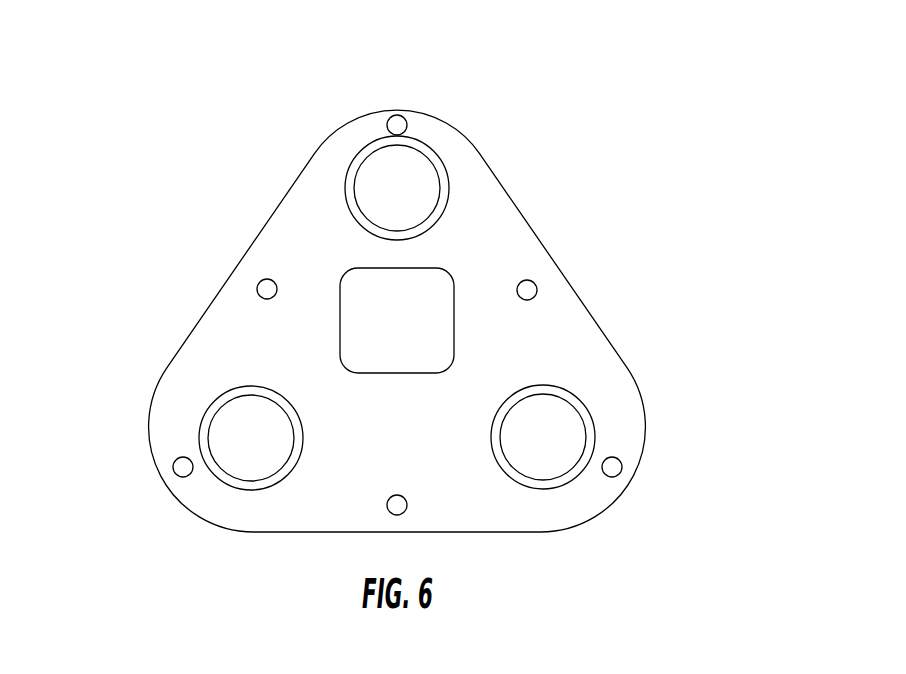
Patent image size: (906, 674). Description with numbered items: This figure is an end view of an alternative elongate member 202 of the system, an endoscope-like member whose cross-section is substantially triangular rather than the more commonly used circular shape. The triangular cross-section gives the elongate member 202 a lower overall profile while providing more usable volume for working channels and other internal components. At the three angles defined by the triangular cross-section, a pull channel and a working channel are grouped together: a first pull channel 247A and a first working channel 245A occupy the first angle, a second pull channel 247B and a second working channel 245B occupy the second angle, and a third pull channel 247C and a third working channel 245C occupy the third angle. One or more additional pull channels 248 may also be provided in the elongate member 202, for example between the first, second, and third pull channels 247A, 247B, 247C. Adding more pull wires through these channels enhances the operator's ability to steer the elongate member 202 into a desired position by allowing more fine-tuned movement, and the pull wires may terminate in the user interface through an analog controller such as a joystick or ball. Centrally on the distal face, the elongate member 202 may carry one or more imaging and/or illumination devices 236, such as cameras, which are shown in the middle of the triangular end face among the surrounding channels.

The elongate member 202 is at (353, 76).
The imaging device 236 is at (415, 350).
The first working channel 245A is at (357, 168).
The second working channel 245B is at (558, 482).
The third working channel 245C is at (222, 393).
The first pull channel 247A is at (407, 131).
The second pull channel 247B is at (622, 470).
The third pull channel 247C is at (178, 467).
The additional pull channels 248 is at (267, 289).